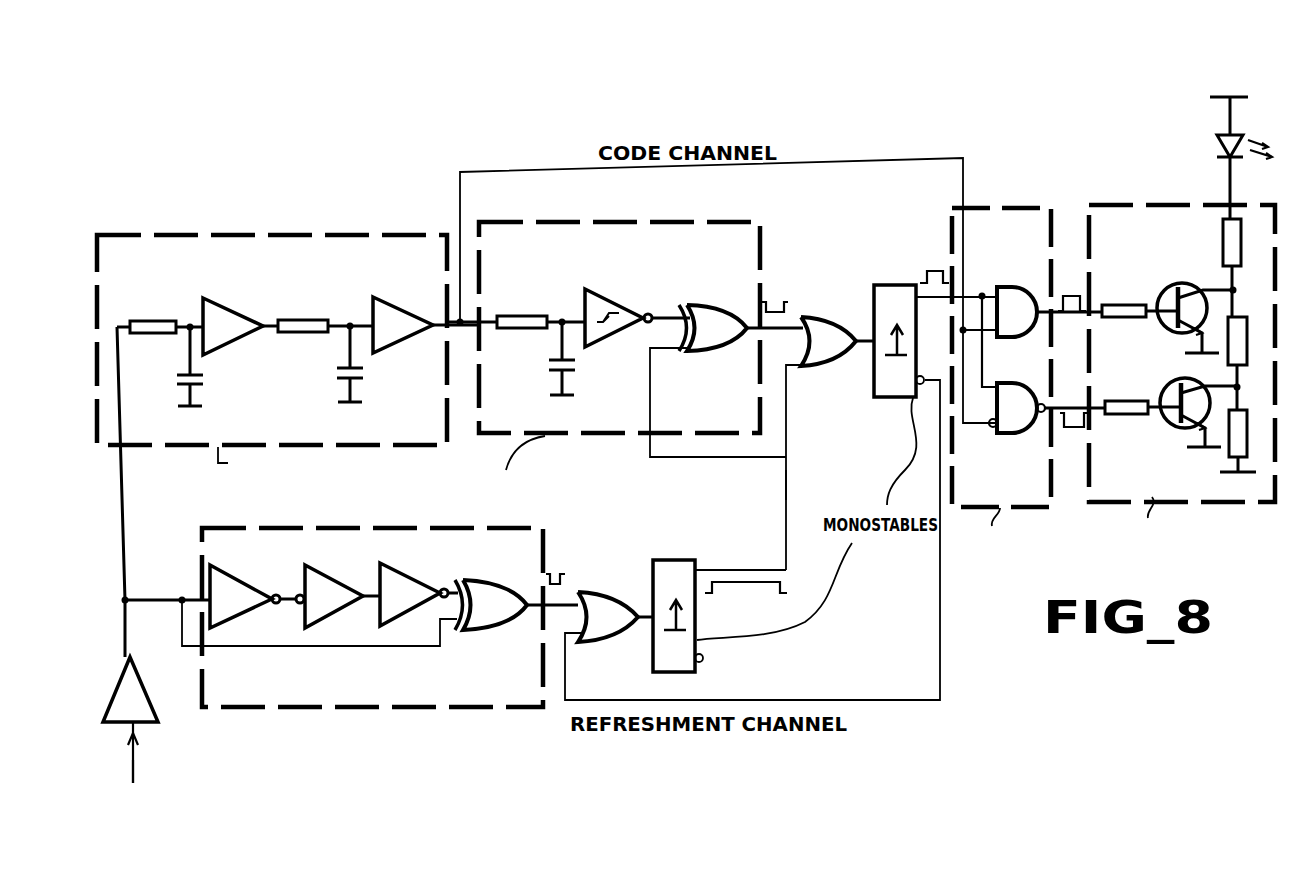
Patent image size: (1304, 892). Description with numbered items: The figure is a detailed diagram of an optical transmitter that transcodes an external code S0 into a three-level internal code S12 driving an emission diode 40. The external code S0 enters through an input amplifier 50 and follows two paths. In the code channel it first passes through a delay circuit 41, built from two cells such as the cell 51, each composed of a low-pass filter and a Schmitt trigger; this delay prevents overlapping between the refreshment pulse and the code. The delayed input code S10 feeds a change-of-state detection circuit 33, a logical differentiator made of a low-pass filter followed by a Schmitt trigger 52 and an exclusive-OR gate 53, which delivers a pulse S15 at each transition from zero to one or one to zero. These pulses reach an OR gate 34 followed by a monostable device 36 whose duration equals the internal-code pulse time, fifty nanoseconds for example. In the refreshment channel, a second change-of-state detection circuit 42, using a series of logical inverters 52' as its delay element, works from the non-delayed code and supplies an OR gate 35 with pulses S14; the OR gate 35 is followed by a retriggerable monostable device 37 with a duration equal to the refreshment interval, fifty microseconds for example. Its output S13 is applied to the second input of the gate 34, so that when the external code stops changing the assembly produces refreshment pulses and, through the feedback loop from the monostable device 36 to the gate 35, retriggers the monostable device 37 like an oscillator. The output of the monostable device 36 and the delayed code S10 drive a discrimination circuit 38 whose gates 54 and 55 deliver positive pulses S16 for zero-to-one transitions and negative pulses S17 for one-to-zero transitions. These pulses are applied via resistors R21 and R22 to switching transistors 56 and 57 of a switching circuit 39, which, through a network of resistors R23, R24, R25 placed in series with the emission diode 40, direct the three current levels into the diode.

The delay circuit 41 is at (148, 231).
The cell 51 is at (262, 292).
The input amplifier 50 is at (152, 702).
The external code S0 is at (136, 770).
The delayed input code S10 is at (460, 318).
The second change-of-state detection circuit 42 is at (301, 527).
The series of logical inverters 52' is at (351, 584).
The OR gate 35 is at (596, 644).
The change-of-state pulse signal S14 is at (562, 598).
The retriggerable monostable device 37 is at (668, 560).
The output of the monostable device 37 S13 is at (788, 500).
The change-of-state detection circuit 33 is at (520, 217).
The Schmitt trigger 52 is at (585, 327).
The exclusive-OR gate 53 is at (703, 306).
The OR gate 34 is at (836, 364).
The code channel pulse signal S15 is at (793, 322).
The monostable device 36 is at (908, 398).
The discrimination circuit 38 is at (1006, 185).
The gate 54 is at (1026, 288).
The gate 55 is at (1038, 436).
The positive transition signal S16 is at (1066, 313).
The negative transition signal S17 is at (1066, 406).
The switching circuit 39 is at (1130, 203).
The emission diode 40 is at (1218, 142).
The three-level internal code S12 is at (1228, 192).
The resistor R21 is at (1140, 283).
The resistor R22 is at (1134, 416).
The resistor R23 is at (1222, 250).
The resistor R24 is at (1248, 322).
The resistor R25 is at (1250, 436).
The transistor 56 is at (1192, 285).
The transistor 57 is at (1176, 384).